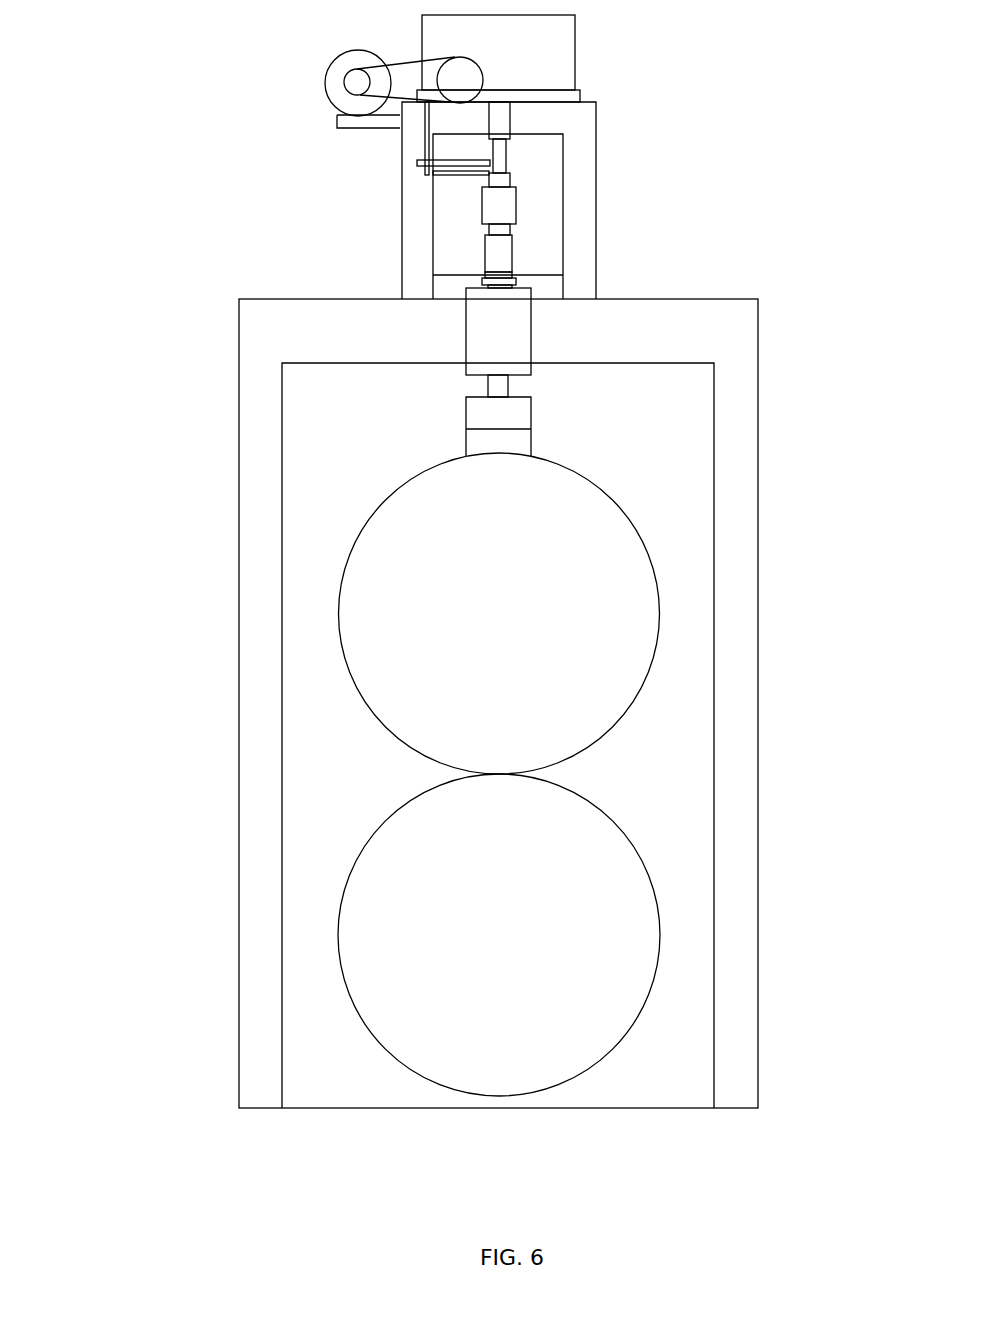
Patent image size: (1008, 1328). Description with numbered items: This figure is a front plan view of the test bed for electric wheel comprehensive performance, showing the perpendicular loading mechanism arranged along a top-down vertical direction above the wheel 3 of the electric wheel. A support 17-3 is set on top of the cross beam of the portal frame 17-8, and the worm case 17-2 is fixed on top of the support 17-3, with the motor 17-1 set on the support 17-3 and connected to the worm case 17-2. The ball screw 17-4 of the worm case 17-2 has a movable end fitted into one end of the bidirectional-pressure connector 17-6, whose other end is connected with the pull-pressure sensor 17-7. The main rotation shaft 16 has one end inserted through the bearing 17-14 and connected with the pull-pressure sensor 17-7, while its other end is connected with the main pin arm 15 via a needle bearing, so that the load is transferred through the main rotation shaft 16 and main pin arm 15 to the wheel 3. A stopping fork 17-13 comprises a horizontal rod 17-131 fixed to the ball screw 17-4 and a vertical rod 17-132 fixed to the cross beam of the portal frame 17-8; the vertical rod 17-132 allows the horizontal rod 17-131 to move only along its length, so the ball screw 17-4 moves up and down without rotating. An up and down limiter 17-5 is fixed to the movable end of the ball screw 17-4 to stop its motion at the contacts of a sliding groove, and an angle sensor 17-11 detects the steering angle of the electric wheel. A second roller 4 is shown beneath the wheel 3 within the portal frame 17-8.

The motor 17-1 is at (357, 82).
The worm case 17-2 is at (520, 75).
The support 17-3 is at (570, 117).
The ball screw 17-4 is at (498, 150).
The up and down limiter 17-5 is at (483, 177).
The bidirectional-pressure connector 17-6 is at (497, 206).
The pull-pressure sensor 17-7 is at (500, 255).
The portal frame 17-8 is at (732, 372).
The angle sensor 17-11 is at (433, 275).
The stopping fork 17-13 is at (268, 162).
The horizontal rod 17-131 is at (437, 164).
The vertical rod 17-132 is at (425, 137).
The bearing 17-14 is at (510, 335).
The main rotation shaft 16 is at (497, 385).
The main pin arm 15 is at (497, 413).
The wheel 3 is at (562, 573).
The lower roller 4 is at (415, 905).